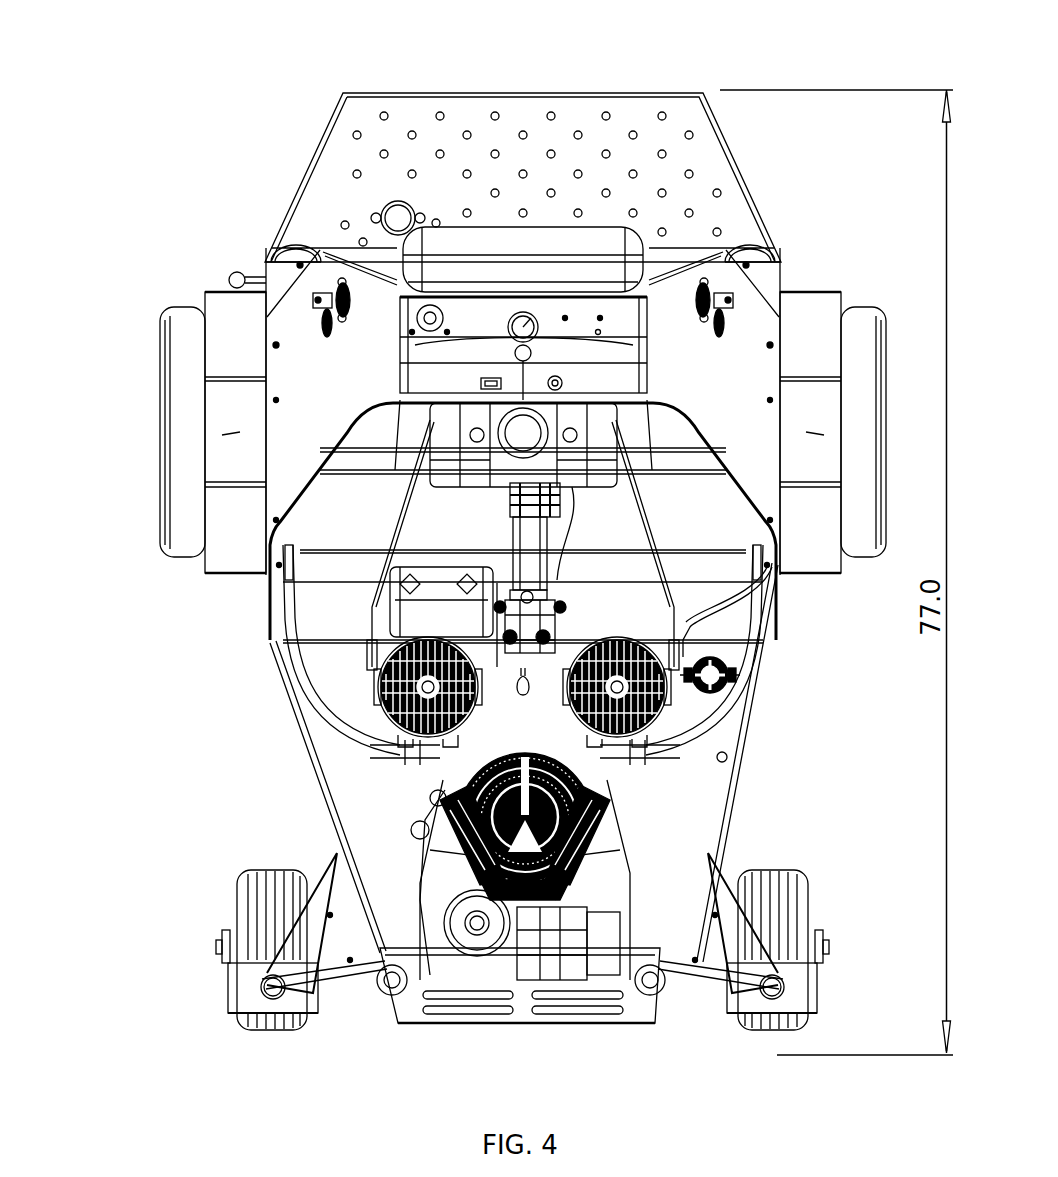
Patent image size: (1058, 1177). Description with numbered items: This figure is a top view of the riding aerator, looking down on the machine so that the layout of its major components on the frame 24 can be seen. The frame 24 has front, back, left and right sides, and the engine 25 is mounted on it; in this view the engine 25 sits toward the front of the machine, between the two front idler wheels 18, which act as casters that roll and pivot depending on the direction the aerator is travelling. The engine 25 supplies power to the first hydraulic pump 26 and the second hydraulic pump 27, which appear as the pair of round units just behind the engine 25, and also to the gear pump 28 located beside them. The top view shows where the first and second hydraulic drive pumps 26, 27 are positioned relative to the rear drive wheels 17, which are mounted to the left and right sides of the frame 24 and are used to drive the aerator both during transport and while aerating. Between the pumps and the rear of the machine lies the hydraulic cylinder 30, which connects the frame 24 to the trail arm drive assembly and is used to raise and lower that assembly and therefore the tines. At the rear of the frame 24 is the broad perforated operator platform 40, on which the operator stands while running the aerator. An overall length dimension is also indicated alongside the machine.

The operator platform 40 is at (523, 154).
The rear drive wheel 17 is at (158, 374).
The hydraulic cylinder 30 is at (507, 562).
The gear pump 28 is at (737, 674).
The second hydraulic pump 27 is at (390, 728).
The first hydraulic pump 26 is at (665, 722).
The engine 25 is at (413, 849).
The frame 24 is at (728, 801).
The front idler wheel 18 is at (233, 876).